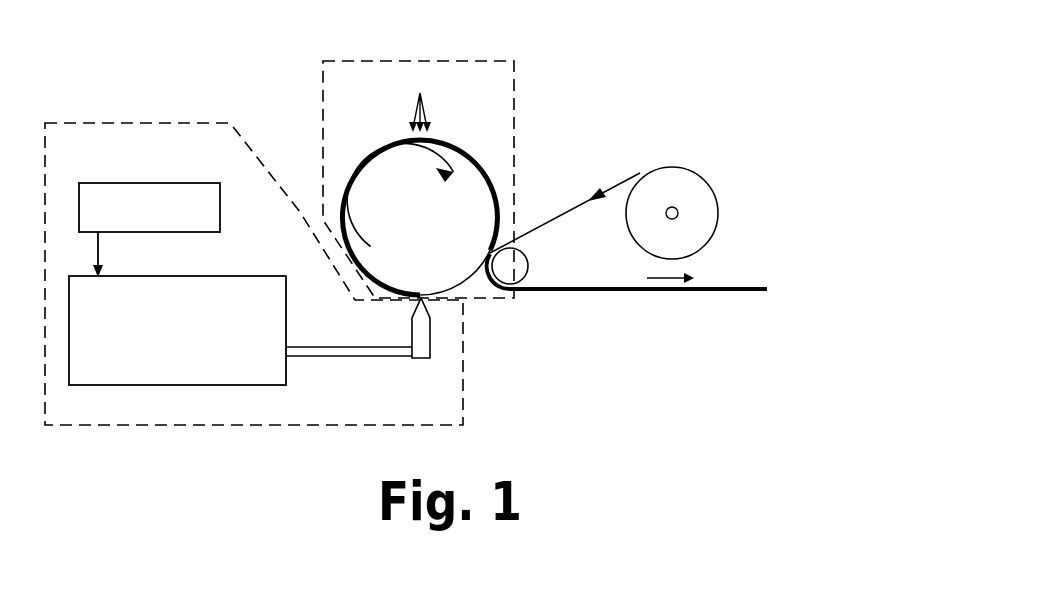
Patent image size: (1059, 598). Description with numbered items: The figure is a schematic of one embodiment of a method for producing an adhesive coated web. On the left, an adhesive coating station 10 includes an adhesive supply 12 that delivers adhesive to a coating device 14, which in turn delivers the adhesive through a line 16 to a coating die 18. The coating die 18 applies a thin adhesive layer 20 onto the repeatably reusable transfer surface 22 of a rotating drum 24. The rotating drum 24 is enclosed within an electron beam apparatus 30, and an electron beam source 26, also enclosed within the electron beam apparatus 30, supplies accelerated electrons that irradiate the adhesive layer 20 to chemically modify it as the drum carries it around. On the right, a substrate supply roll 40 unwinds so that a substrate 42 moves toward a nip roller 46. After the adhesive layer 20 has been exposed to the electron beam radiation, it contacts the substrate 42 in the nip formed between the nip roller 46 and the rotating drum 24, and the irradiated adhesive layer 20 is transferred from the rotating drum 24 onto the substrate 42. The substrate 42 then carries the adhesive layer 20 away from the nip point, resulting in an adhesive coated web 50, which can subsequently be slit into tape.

The adhesive coating station 10 is at (236, 116).
The adhesive supply 12 is at (132, 183).
The coating device 14 is at (208, 276).
The line 16 is at (330, 354).
The coating die 18 is at (422, 338).
The thin adhesive layer 20 is at (363, 163).
The repeatably reusable transfer surface 22 is at (466, 282).
The rotating drum 24 is at (457, 183).
The electron beam source 26 is at (428, 112).
The electron beam apparatus 30 is at (510, 52).
The substrate supply roll 40 is at (693, 188).
The substrate 42 is at (618, 183).
The nip roller 46 is at (522, 268).
The adhesive coated web 50 is at (743, 292).